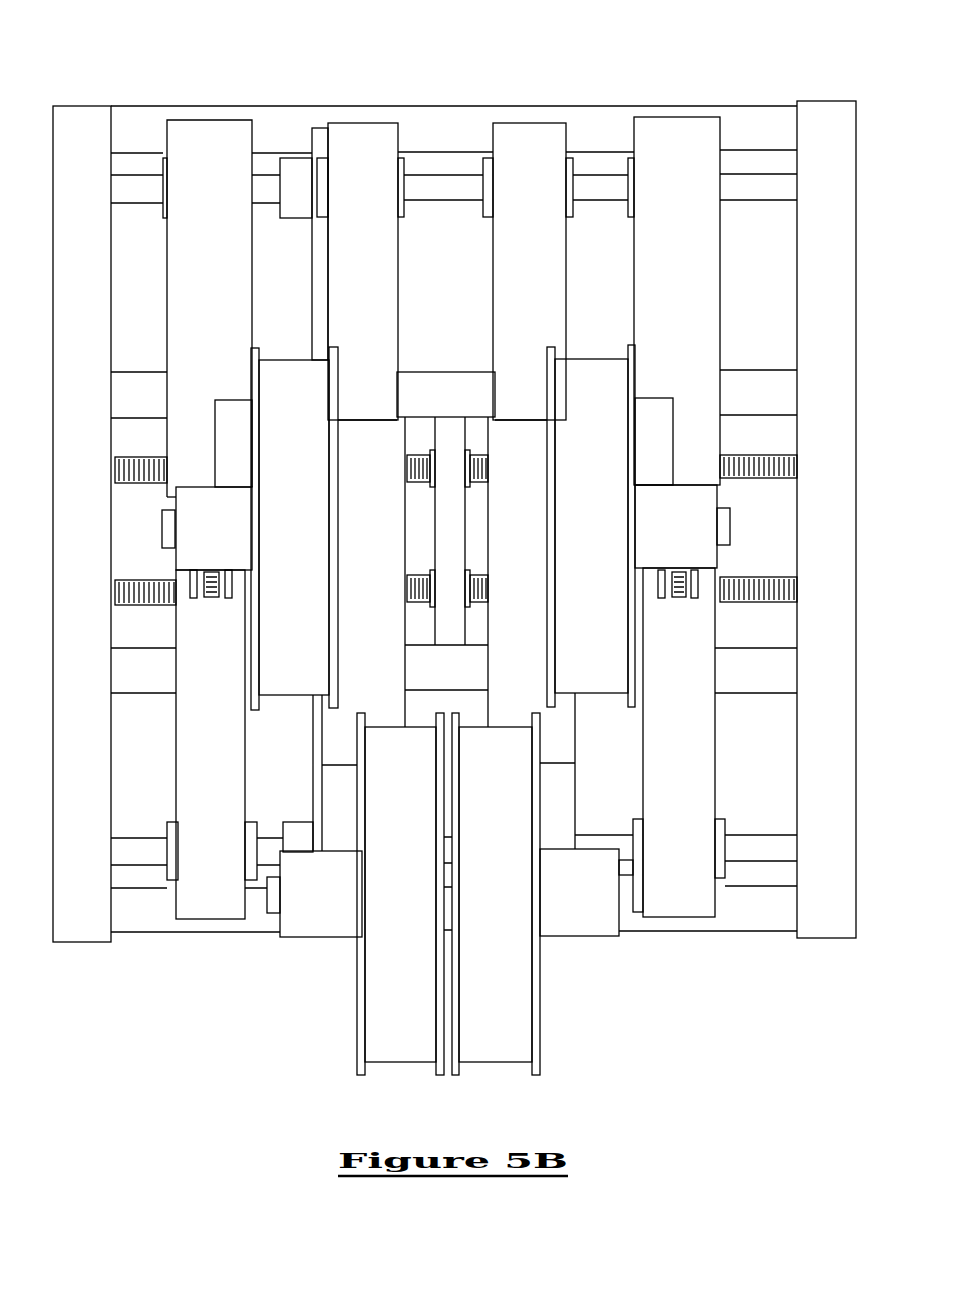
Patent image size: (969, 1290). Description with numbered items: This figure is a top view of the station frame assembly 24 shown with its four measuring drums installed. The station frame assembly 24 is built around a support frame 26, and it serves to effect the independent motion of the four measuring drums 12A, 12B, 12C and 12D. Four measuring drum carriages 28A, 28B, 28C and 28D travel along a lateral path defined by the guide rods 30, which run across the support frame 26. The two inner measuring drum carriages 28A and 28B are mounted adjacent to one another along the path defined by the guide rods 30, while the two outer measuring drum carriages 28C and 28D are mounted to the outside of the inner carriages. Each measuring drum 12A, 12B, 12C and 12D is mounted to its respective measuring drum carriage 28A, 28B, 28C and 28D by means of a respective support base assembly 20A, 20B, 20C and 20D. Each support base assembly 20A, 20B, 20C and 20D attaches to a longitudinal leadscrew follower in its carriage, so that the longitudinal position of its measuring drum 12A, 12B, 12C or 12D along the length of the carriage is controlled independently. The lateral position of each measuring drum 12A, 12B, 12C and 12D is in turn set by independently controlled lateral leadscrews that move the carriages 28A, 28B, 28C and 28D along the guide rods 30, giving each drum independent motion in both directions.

The station frame assembly 24 is at (449, 36).
The support frame 26 is at (781, 105).
The measuring drum carriage 28A is at (530, 122).
The measuring drum carriage 28B is at (358, 122).
The measuring drum carriage 28C is at (677, 117).
The measuring drum carriage 28D is at (212, 118).
The guide rods 30 is at (436, 205).
The support base assembly 20A is at (543, 639).
The support base assembly 20B is at (387, 639).
The support base assembly 20C is at (700, 309).
The support base assembly 20D is at (230, 309).
The measuring drum 12A is at (510, 910).
The measuring drum 12B is at (420, 910).
The measuring drum 12C is at (610, 536).
The measuring drum 12D is at (310, 536).